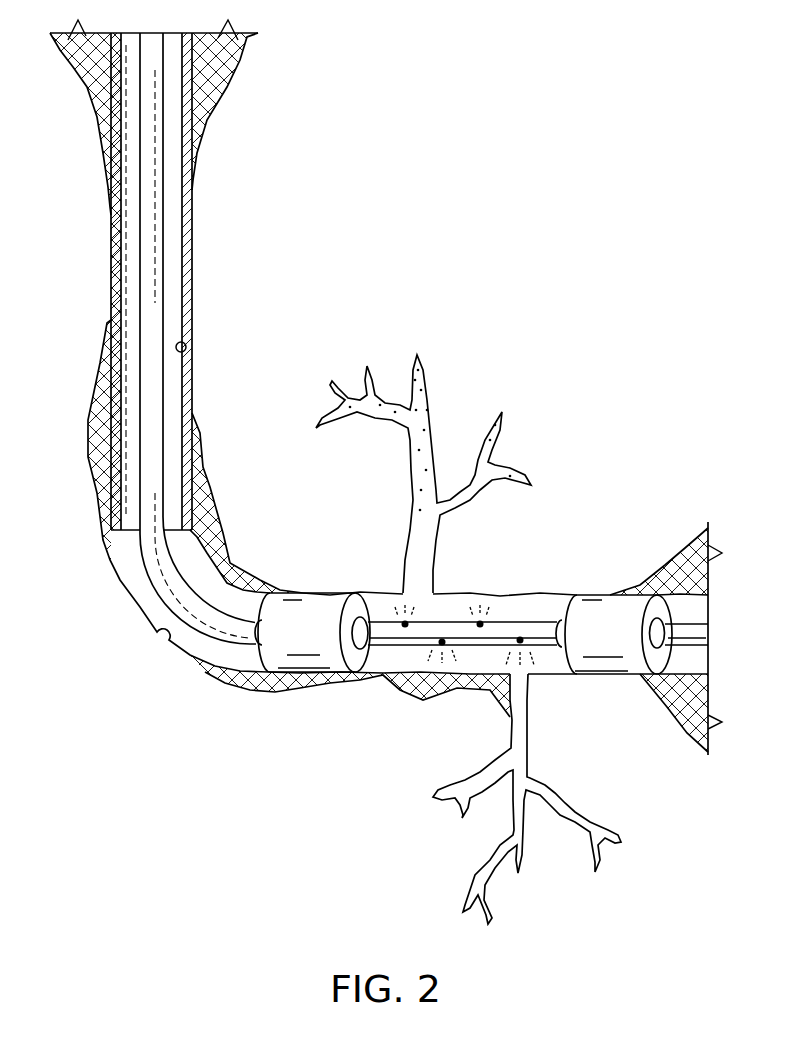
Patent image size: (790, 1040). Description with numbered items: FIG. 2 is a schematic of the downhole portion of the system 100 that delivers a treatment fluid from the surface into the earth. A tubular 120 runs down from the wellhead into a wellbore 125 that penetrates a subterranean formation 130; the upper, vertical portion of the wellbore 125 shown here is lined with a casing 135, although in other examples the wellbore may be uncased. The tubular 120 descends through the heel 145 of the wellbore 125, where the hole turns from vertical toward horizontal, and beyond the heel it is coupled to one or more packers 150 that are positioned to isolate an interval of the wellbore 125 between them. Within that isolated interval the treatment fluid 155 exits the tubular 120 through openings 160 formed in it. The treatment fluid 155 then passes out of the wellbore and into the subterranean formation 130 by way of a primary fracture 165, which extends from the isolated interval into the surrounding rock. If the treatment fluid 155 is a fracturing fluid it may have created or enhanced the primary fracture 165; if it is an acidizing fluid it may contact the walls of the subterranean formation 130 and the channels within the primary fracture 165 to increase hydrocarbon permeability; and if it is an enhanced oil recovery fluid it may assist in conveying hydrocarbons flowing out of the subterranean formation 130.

The system 100 is at (465, 215).
The tubular 120 is at (167, 267).
The wellbore 125 is at (196, 207).
The subterranean formation 130 is at (603, 478).
The casing 135 is at (187, 349).
The heel 145 is at (158, 638).
The packers 150 is at (330, 672).
The treatment fluid 155 is at (420, 608).
The openings 160 is at (522, 636).
The primary fracture 165 is at (410, 548).